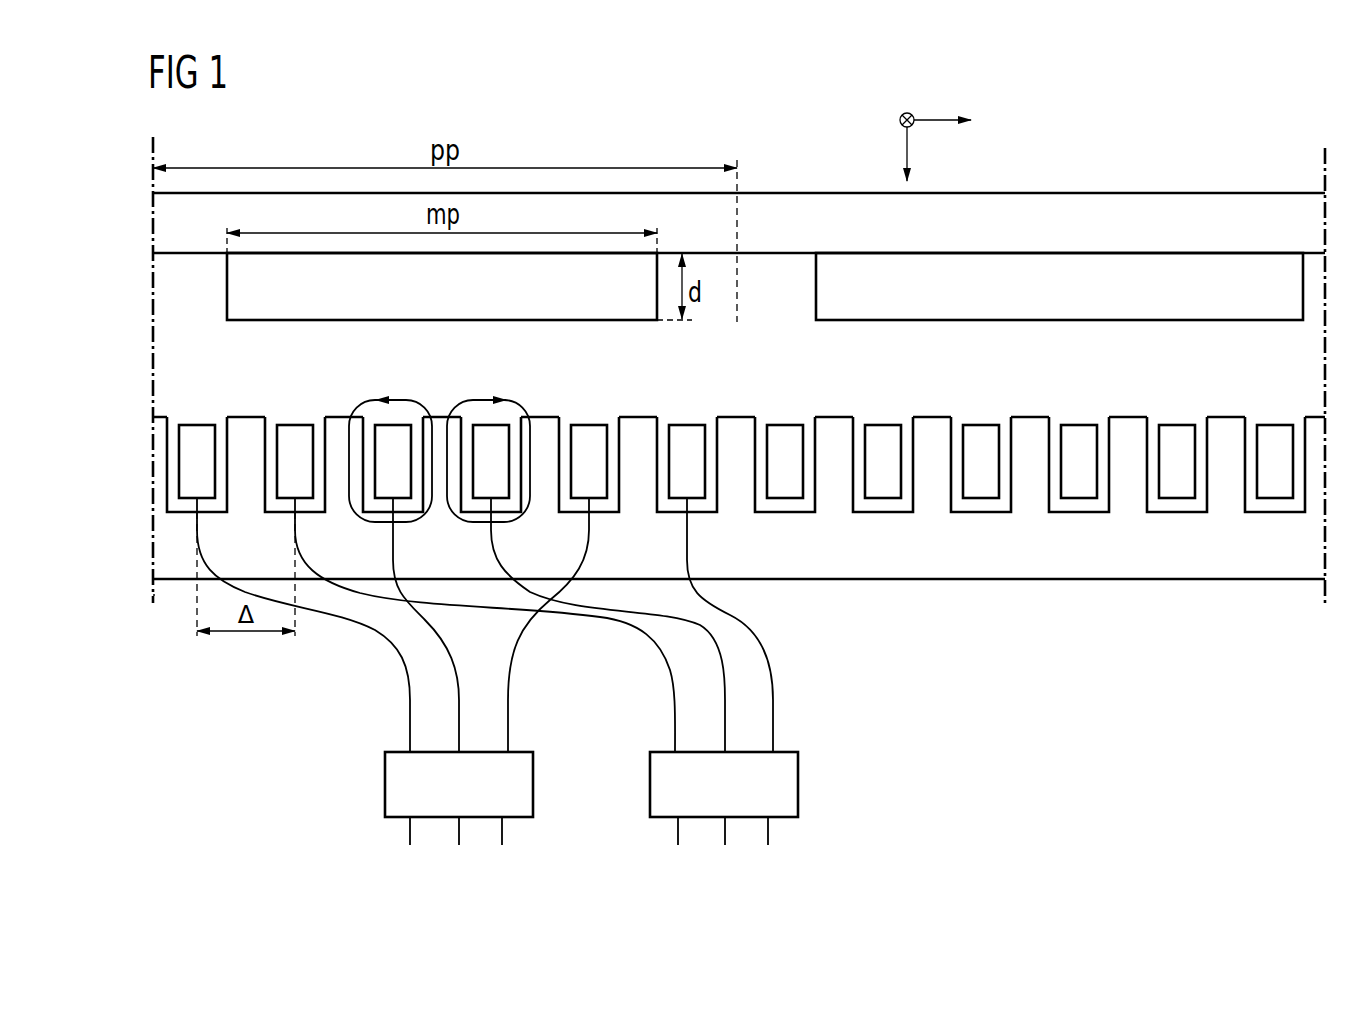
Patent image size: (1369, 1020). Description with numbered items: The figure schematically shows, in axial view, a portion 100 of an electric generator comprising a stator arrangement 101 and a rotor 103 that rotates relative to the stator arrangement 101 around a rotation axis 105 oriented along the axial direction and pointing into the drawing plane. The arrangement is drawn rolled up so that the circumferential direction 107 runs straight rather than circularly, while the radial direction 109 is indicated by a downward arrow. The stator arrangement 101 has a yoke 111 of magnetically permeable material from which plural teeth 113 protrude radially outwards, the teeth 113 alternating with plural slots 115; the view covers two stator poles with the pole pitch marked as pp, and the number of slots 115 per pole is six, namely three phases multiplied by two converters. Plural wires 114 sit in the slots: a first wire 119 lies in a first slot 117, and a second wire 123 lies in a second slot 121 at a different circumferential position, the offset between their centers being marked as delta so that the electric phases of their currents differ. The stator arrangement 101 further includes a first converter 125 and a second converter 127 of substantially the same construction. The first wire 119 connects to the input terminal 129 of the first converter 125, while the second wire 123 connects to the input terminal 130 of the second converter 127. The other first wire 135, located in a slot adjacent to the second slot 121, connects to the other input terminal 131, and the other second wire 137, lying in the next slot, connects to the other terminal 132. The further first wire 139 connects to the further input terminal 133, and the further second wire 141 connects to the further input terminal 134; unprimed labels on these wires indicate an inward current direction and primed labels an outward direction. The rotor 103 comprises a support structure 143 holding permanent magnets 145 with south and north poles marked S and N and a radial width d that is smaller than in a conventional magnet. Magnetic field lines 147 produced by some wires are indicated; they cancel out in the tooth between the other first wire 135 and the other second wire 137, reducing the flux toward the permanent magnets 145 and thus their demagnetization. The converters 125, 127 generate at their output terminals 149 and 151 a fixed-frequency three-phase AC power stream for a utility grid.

The portion of an electric generator 100 is at (1212, 133).
The stator arrangement 101 is at (1188, 702).
The rotor 103 is at (789, 178).
The rotation axis 105 is at (904, 112).
The circumferential direction 107 is at (937, 114).
The radial direction 109 is at (904, 144).
The yoke 111 is at (1218, 571).
The teeth 113 is at (240, 414).
The wires 114 is at (773, 513).
The slots 115 is at (768, 411).
The first slot 117 is at (181, 410).
The first wire 119 is at (198, 424).
The second slot 121 is at (279, 410).
The second wire 123 is at (296, 424).
The first converter 125 is at (533, 782).
The second converter 127 is at (798, 782).
The input terminal 129 is at (406, 748).
The input terminal 130 is at (670, 748).
The another input terminal 131 is at (464, 748).
The another input terminal 132 is at (730, 748).
The further input terminal 133 is at (513, 748).
The further input terminal 134 is at (778, 748).
The other first wire 135 is at (393, 414).
The other second wire 137 is at (491, 414).
The further first wire 139 is at (589, 424).
The further second wire 141 is at (687, 424).
The support structure 143 is at (1119, 200).
The permanent magnets 145 is at (235, 311).
The magnetic field lines 147 is at (432, 516).
The output terminals 149 is at (488, 851).
The output terminals 151 is at (754, 851).